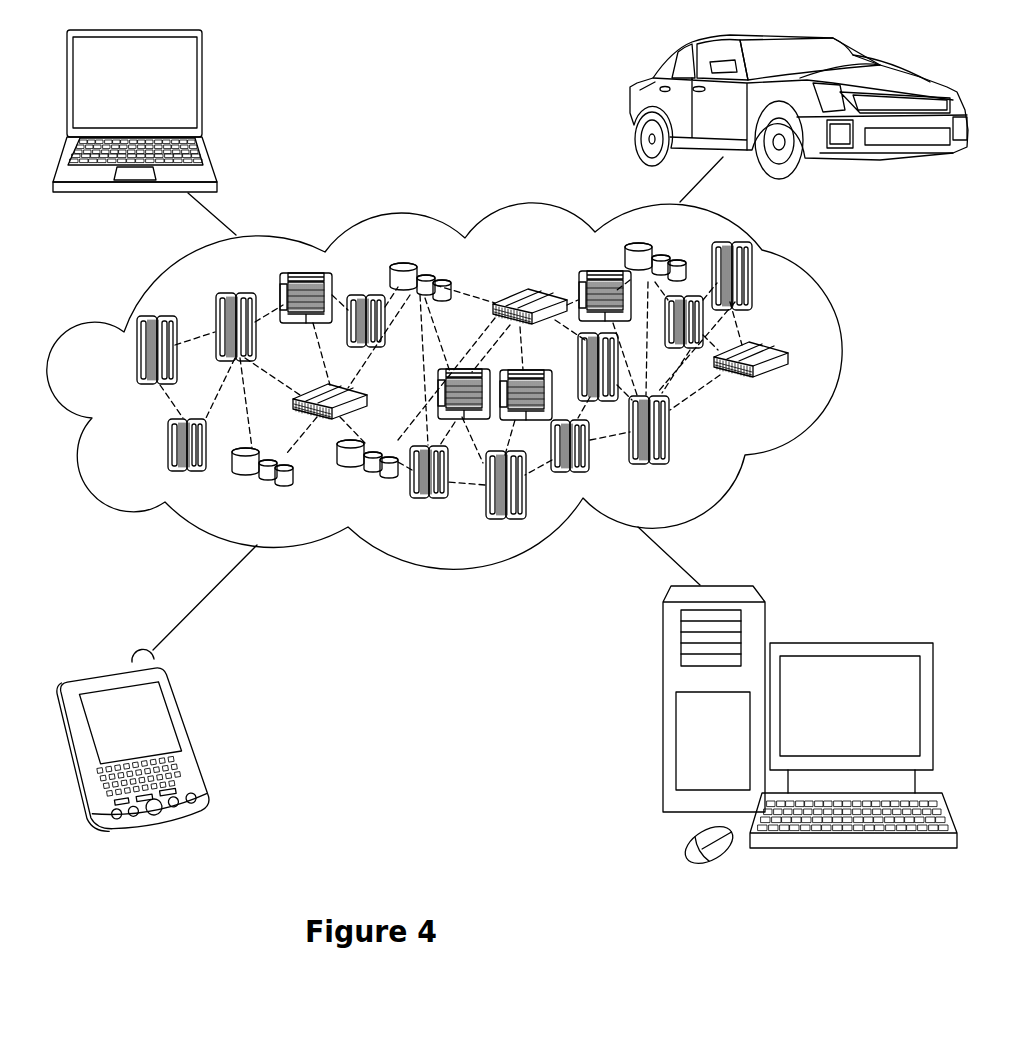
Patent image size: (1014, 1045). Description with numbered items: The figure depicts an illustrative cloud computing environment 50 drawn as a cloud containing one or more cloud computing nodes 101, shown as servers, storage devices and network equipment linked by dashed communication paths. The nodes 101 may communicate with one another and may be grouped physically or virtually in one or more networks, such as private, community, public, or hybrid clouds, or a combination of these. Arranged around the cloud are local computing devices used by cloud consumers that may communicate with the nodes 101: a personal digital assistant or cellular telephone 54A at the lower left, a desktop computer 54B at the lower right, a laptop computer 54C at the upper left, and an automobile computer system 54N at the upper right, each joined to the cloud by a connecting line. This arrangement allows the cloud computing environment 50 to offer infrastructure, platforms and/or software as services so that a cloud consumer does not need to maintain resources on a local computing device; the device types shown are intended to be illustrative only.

The cloud computing environment 50 is at (480, 386).
The cloud computing nodes 101 is at (793, 388).
The personal digital assistant (PDA) or cellular telephone 54A is at (190, 735).
The desktop computer 54B is at (847, 643).
The laptop computer 54C is at (203, 91).
The automobile computer system 54N is at (633, 108).